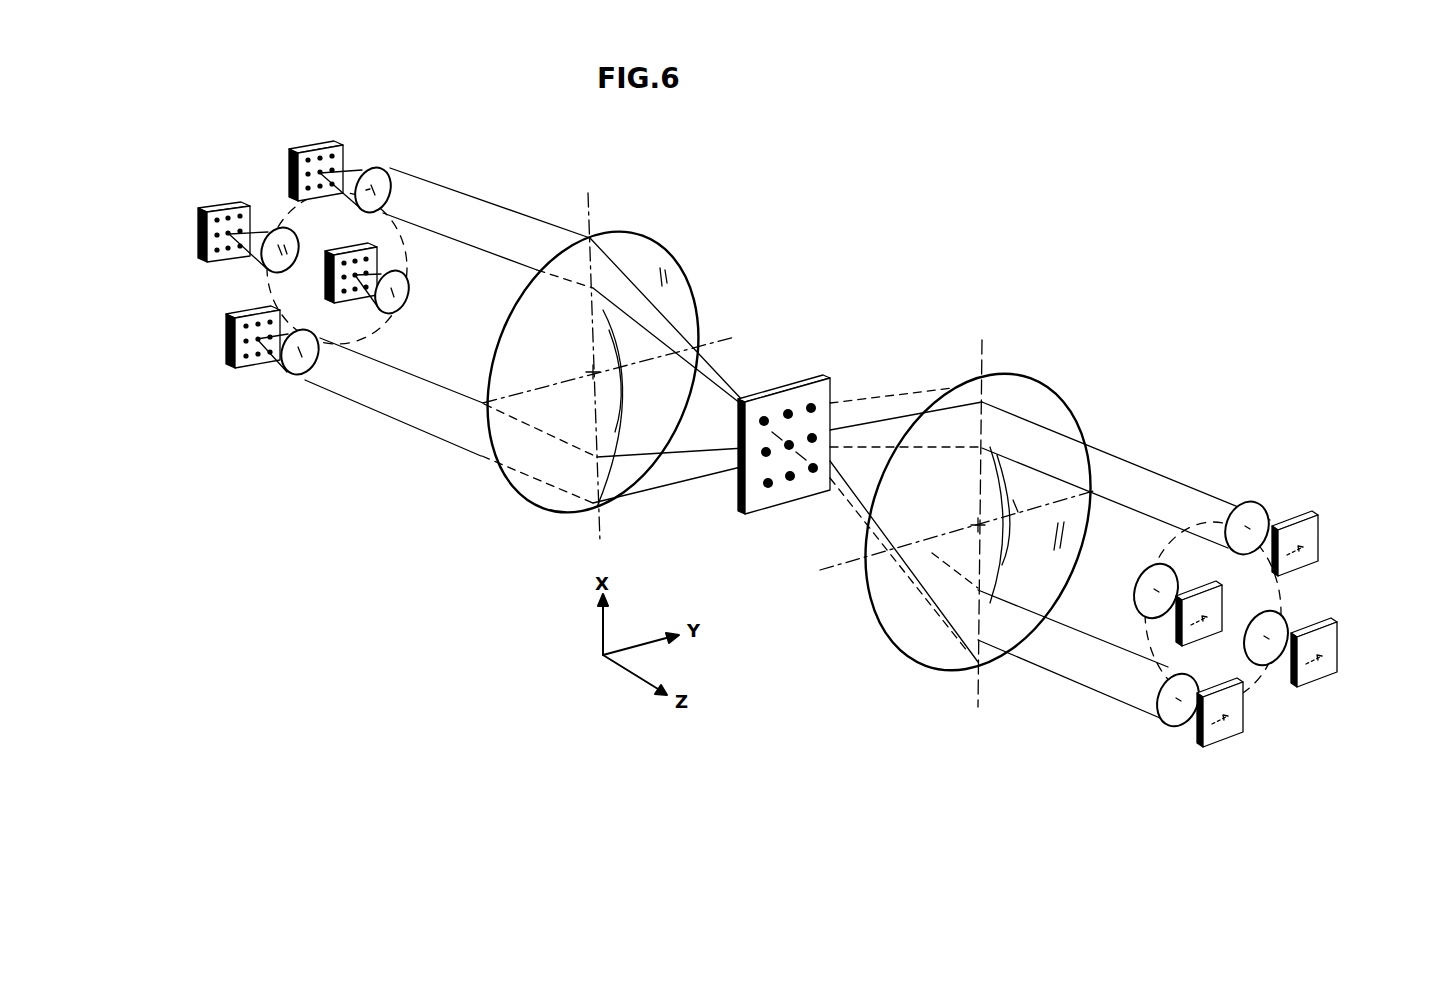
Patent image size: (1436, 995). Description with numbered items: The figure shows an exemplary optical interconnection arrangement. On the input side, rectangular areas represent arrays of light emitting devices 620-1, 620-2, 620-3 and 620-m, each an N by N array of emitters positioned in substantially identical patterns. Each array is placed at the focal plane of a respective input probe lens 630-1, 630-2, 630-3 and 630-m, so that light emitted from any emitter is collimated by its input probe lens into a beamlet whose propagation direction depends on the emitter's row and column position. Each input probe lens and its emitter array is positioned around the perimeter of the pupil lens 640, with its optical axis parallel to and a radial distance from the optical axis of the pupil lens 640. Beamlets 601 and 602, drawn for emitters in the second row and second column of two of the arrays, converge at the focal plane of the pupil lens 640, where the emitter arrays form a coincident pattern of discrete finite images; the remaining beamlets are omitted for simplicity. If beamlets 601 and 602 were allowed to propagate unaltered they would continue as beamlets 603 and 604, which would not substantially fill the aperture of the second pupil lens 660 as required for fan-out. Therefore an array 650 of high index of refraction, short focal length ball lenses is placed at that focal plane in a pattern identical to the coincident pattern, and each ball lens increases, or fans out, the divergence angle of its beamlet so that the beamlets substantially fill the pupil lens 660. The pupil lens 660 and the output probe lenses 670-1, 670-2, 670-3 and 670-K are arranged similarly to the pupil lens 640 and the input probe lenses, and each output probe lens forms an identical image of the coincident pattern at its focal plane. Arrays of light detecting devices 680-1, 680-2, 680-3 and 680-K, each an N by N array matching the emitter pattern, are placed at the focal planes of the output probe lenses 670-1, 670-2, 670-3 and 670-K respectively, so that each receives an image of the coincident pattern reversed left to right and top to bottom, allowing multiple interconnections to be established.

The beamlet 601 is at (672, 318).
The beamlet 602 is at (680, 457).
The beamlet 603 is at (938, 556).
The beamlet 604 is at (872, 447).
The array of light emitting devices 620-1 is at (327, 147).
The array of light emitting devices 620-2 is at (352, 303).
The array of light emitting devices 620-3 is at (235, 335).
The array of light emitting devices 620-m is at (240, 208).
The input probe lens 630-1 is at (381, 167).
The input probe lens 630-2 is at (410, 292).
The input probe lens 630-3 is at (305, 375).
The input probe lens 630-m is at (262, 268).
The pupil lens 640 is at (627, 233).
The array of ball lenses 650 is at (801, 382).
The pupil lens 660 is at (1050, 392).
The output probe lens 670-1 is at (1253, 507).
The output probe lens 670-2 is at (1282, 618).
The output probe lens 670-3 is at (1170, 717).
The output probe lens 670-K is at (1137, 588).
The array of light detecting devices 680-1 is at (1323, 540).
The array of light detecting devices 680-2 is at (1323, 670).
The array of light detecting devices 680-3 is at (1217, 737).
The array of light detecting devices 680-K is at (1212, 647).